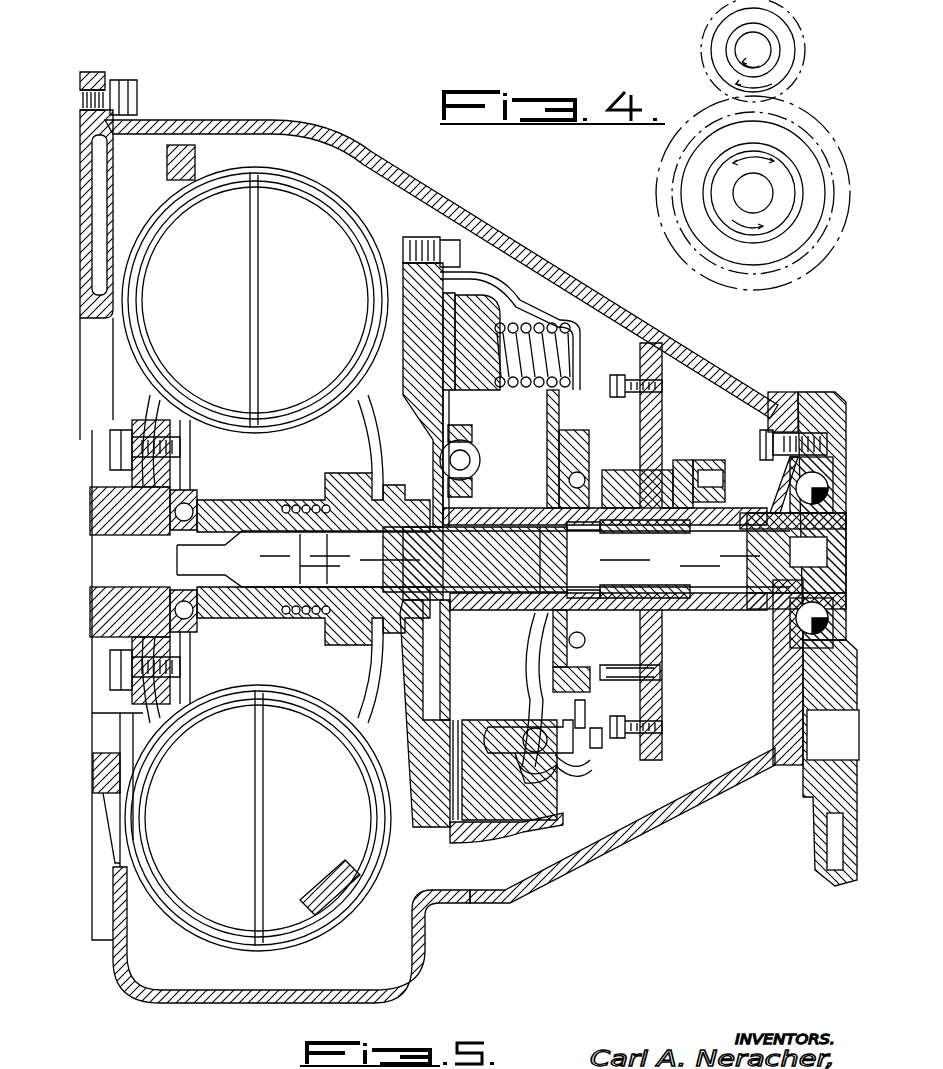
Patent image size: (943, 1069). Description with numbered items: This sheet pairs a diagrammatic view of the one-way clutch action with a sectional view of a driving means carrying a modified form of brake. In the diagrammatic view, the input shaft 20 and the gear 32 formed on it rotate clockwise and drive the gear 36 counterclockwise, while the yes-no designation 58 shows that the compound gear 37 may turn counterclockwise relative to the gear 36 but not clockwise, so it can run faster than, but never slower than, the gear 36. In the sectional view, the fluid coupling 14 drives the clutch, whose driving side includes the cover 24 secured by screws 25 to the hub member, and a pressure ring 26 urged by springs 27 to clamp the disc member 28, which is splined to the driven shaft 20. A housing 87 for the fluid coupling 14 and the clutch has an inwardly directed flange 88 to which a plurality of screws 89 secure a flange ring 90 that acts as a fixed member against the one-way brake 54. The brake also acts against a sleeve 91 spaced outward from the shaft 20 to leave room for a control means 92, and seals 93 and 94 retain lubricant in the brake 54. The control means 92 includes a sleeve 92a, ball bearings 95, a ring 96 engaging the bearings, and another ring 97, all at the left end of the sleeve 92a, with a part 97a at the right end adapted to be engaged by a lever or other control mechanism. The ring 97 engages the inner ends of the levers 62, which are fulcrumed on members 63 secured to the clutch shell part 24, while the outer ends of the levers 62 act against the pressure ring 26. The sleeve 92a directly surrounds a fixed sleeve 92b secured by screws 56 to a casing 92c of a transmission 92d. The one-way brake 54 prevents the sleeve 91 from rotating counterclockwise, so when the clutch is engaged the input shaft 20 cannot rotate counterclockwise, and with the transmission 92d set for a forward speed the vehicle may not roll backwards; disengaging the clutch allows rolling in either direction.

In FIG. 5, the fluid coupling 14 is at (312, 151).
In FIG. 4, the driven shaft 20 is at (770, 48).
In FIG. 5, the driven shaft 20 is at (630, 581).
In FIG. 5, the cover 24 is at (580, 770).
In FIG. 5, the screws 25 is at (554, 286).
In FIG. 5, the pressure ring 26 is at (520, 822).
In FIG. 5, the springs 27 is at (568, 345).
In FIG. 5, the disc member 28 is at (472, 452).
In FIG. 4, the gear 32 is at (790, 28).
In FIG. 4, the gear 36 is at (812, 262).
In FIG. 4, the compound gear 37 is at (772, 230).
In FIG. 5, the one-way brake 54 is at (660, 650).
In FIG. 5, the screws 56 is at (757, 440).
In FIG. 4, the dial 58 is at (780, 160).
In FIG. 5, the levers 62 is at (535, 628).
In FIG. 5, the members 63 is at (570, 780).
In FIG. 5, the housing 87 is at (643, 322).
In FIG. 5, the inwardly directed flange 88 is at (661, 412).
In FIG. 5, the screws 89 is at (663, 388).
In FIG. 5, the flange ring 90 is at (602, 720).
In FIG. 5, the sleeve 91 is at (600, 465).
In FIG. 5, the control means 92 is at (674, 466).
In FIG. 5, the sleeve 92a is at (640, 516).
In FIG. 5, the fixed sleeve 92b is at (712, 516).
In FIG. 5, the casing 92c is at (797, 398).
In FIG. 5, the transmission 92d is at (835, 380).
In FIG. 5, the seal 93 is at (661, 672).
In FIG. 5, the seal 94 is at (604, 690).
In FIG. 5, the ball bearings 95 is at (568, 536).
In FIG. 5, the ring 96 is at (562, 535).
In FIG. 5, the ring 97 is at (538, 538).
In FIG. 5, the part 97a is at (700, 473).